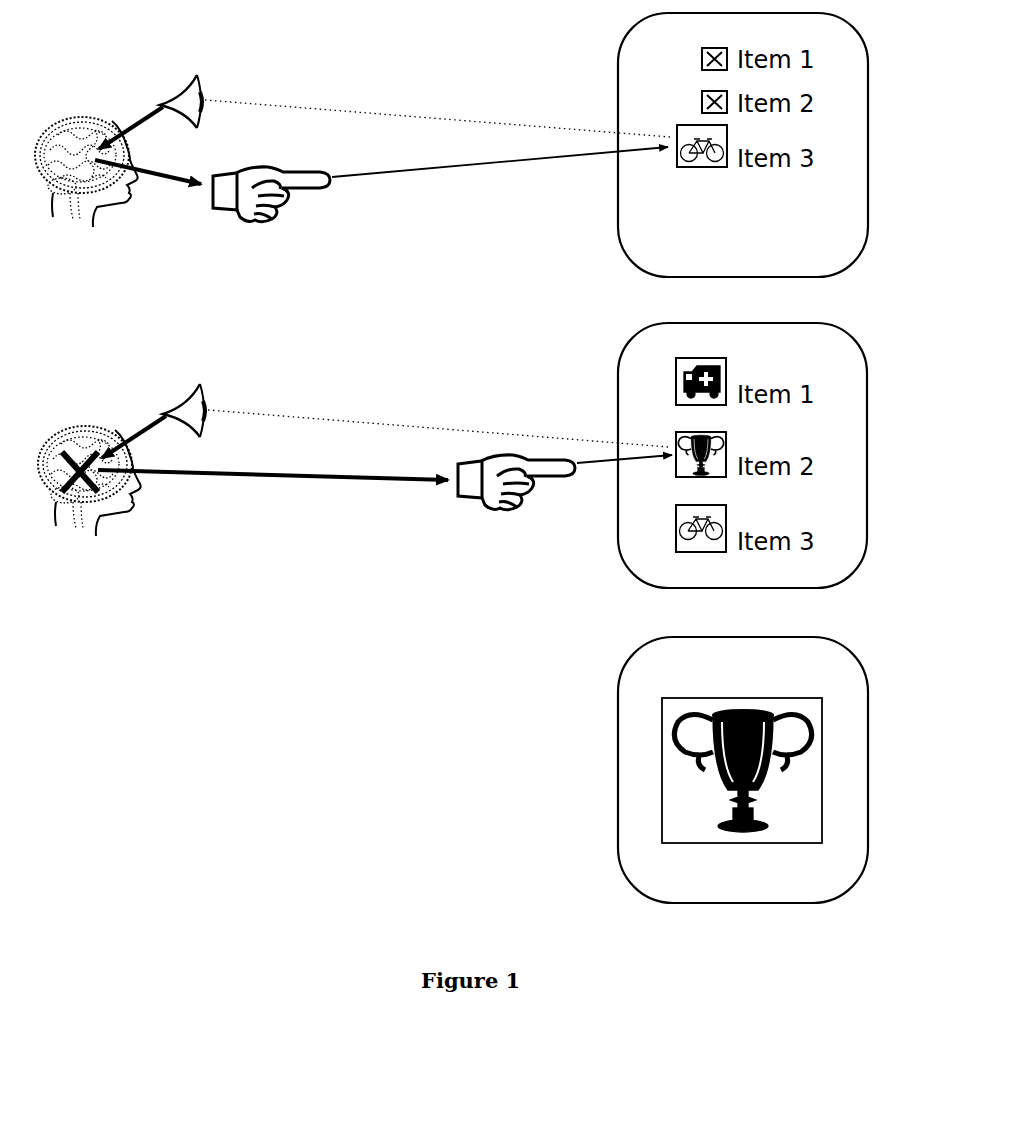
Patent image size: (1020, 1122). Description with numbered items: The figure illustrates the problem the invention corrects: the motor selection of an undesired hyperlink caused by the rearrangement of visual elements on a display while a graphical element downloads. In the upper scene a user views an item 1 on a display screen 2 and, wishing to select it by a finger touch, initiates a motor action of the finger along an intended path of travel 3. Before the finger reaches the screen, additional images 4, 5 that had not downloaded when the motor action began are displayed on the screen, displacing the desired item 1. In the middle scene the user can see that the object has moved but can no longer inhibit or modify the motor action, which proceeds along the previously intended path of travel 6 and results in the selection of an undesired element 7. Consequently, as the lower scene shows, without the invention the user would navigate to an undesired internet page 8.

The item 1 is at (708, 168).
The display screen 2 is at (855, 253).
The intended path of travel 3 is at (532, 163).
The additional image 4 is at (700, 55).
The additional image 5 is at (700, 98).
The previously intended path of travel 6 is at (607, 463).
The undesired element 7 is at (673, 463).
The undesired internet page 8 is at (868, 698).